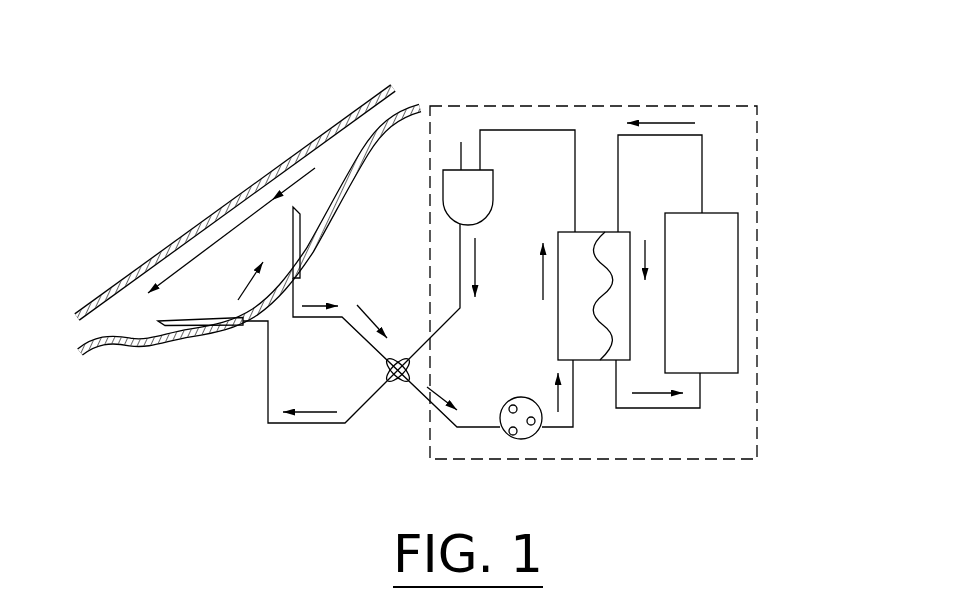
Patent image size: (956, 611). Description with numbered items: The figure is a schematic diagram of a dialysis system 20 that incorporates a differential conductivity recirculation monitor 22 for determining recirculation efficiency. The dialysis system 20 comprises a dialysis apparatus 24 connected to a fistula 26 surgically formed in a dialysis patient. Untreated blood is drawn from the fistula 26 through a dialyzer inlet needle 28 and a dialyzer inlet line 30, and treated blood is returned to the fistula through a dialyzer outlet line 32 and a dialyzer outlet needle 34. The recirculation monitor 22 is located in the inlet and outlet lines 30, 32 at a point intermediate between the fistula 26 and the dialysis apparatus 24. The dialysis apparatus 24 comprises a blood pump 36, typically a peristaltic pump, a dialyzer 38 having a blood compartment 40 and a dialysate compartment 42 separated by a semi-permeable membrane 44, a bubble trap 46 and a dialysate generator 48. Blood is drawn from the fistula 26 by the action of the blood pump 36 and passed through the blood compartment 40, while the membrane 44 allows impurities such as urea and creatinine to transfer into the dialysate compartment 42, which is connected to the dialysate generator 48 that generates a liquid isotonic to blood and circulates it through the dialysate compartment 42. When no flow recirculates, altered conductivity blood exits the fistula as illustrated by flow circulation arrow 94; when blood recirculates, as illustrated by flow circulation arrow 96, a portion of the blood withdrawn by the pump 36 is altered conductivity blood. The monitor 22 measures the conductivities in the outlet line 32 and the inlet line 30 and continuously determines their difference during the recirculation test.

The dialysis system 20 is at (390, 57).
The differential conductivity recirculation monitor 22 is at (407, 342).
The dialysis apparatus 24 is at (651, 106).
The fistula 26 is at (193, 223).
The dialyzer inlet needle 28 is at (307, 270).
The dialyzer inlet line 30 is at (342, 317).
The dialyzer outlet line 32 is at (537, 130).
The dialyzer outlet needle 34 is at (193, 333).
The blood pump 36 is at (517, 442).
The dialyzer 38 is at (558, 243).
The blood compartment 40 is at (558, 343).
The dialysate compartment 42 is at (629, 347).
The semi-permeable membrane 44 is at (617, 232).
The bubble trap 46 is at (453, 170).
The dialysate generator 48 is at (740, 320).
The flow circulation arrow 94 is at (178, 275).
The flow circulation arrow 96 is at (235, 326).